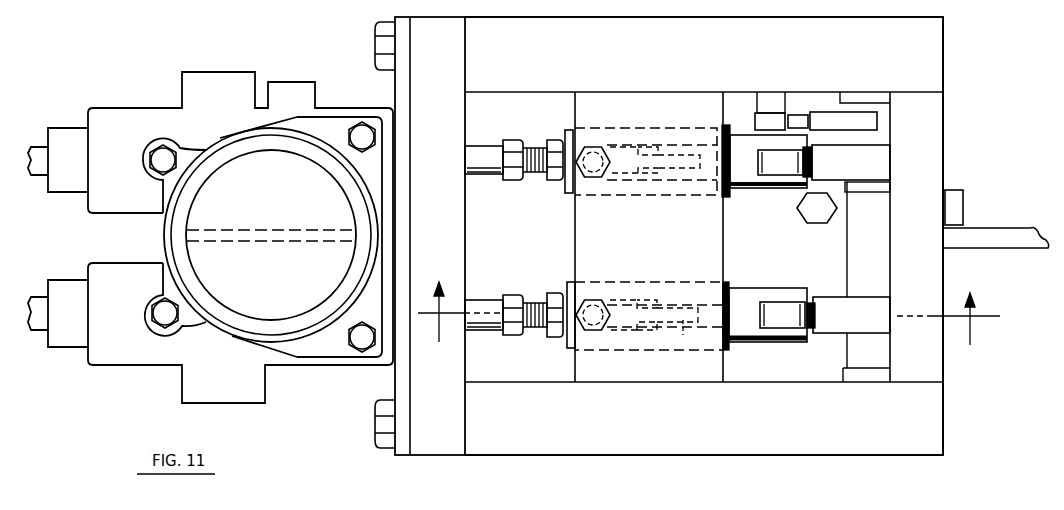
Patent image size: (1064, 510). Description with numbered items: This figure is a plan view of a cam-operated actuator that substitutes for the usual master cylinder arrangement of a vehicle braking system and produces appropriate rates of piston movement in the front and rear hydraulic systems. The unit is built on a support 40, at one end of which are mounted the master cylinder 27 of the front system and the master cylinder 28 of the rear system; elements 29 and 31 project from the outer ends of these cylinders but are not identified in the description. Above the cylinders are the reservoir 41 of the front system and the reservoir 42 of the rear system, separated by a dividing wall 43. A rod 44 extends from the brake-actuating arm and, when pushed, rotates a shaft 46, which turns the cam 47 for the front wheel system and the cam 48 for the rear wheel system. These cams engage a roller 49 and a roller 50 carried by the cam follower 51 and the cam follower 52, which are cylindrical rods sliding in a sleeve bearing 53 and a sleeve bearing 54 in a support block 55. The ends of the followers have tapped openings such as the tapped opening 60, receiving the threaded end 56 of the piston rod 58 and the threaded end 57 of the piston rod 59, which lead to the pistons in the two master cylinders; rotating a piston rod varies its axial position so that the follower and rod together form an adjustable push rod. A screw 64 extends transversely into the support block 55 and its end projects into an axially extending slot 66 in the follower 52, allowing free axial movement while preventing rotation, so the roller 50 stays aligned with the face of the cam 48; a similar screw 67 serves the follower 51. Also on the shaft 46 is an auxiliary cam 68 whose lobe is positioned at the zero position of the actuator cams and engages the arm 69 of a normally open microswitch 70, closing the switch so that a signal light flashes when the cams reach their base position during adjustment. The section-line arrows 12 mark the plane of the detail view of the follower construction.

The section line 12 is at (449, 369).
The master cylinder 27 is at (138, 120).
The master cylinder 28 is at (122, 345).
The upper port fitting 29 is at (38, 147).
The lower port fitting 31 is at (38, 297).
The support 40 is at (475, 456).
The reservoir 41 is at (271, 235).
The reservoir 42 is at (202, 263).
The dividing wall 43 is at (257, 236).
The rod 44 is at (1000, 243).
The shaft 46 is at (880, 245).
The cam 47 is at (876, 156).
The cam 48 is at (853, 305).
The roller 49 is at (775, 176).
The roller 50 is at (782, 302).
The cam follower 51 is at (749, 178).
The cam follower 52 is at (742, 334).
The sleeve bearing 53 is at (607, 124).
The sleeve bearing 54 is at (730, 282).
The support block 55 is at (583, 223).
The threaded end 56 is at (528, 181).
The threaded end 57 is at (535, 295).
The piston rod 58 is at (481, 154).
The piston rod 59 is at (482, 300).
The tapped opening 60 is at (650, 300).
The screw 64 is at (604, 302).
The axially extending slot 66 is at (683, 336).
The screw 67 is at (597, 178).
The auxiliary cam 68 is at (836, 120).
The arm 69 is at (800, 115).
The microswitch 70 is at (773, 113).